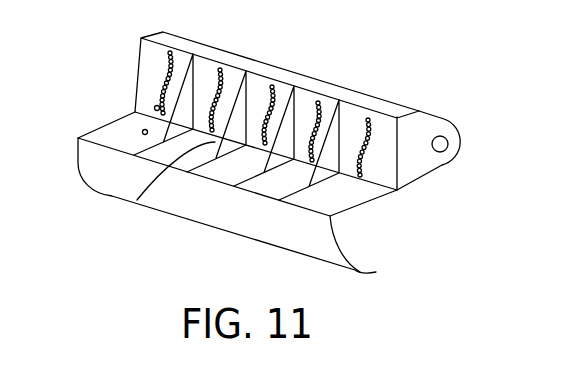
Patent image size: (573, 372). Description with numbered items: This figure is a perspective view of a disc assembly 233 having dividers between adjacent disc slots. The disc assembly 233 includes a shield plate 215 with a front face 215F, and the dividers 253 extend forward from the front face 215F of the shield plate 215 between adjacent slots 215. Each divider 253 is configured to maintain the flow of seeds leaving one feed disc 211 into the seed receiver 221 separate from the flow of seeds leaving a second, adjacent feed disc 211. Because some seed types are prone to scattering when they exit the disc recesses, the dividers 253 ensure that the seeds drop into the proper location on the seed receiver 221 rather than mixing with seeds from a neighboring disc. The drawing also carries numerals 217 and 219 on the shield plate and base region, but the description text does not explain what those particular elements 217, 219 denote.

The feed disc 211 is at (160, 83).
The shield plate 215 is at (358, 92).
The front face 215F is at (382, 155).
The fins 217 is at (178, 44).
The holes 219 is at (145, 131).
The seed receiver 221 is at (252, 238).
The disc assembly 233 is at (294, 57).
The divider 253 is at (137, 200).